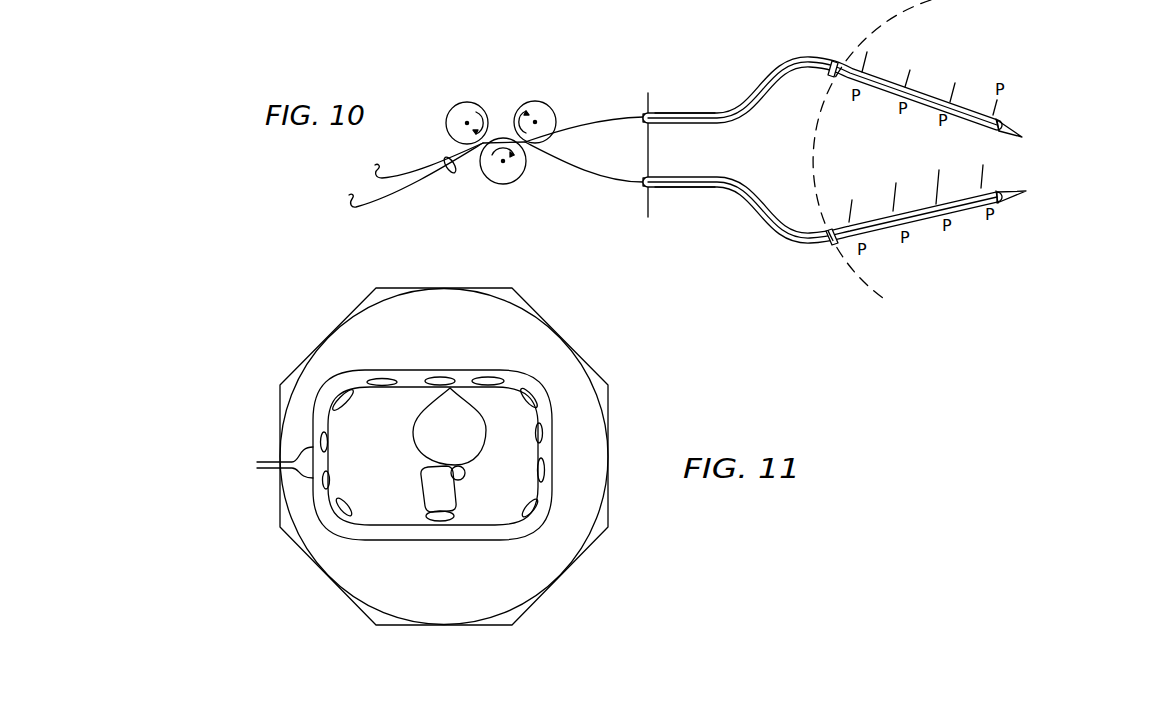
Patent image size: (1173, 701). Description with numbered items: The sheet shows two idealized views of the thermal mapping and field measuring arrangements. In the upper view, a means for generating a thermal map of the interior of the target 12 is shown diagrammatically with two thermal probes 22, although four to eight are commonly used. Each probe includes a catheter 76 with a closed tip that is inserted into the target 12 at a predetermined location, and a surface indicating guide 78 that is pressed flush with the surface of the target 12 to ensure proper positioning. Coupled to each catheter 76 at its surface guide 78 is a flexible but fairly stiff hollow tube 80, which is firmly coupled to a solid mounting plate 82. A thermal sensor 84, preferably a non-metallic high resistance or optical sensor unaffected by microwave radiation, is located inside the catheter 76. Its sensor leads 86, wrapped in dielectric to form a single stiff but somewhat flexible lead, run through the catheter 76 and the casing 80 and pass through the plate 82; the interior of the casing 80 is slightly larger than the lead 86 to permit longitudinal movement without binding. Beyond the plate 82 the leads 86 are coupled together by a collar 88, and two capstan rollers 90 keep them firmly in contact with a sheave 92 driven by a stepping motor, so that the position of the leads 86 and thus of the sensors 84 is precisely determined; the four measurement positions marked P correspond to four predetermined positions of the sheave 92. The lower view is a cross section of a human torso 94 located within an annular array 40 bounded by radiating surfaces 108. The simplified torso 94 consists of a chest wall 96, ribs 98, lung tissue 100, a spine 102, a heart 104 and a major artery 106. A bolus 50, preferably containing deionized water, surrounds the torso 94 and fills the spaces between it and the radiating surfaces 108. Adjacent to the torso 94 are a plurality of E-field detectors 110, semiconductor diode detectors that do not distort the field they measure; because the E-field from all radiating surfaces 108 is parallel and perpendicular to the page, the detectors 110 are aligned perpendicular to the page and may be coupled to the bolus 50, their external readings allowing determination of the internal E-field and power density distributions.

In FIG. 10, the target 12 is at (885, 300).
In FIG. 10, the thermal probe 22 is at (845, 54).
In FIG. 11, the annular array 40 is at (280, 386).
In FIG. 11, the bolus 50 is at (460, 595).
In FIG. 10, the catheter 76 is at (1015, 128).
In FIG. 10, the surface indicating guide 78 is at (832, 76).
In FIG. 10, the hollow tube 80 is at (762, 80).
In FIG. 10, the mounting plate 82 is at (646, 199).
In FIG. 10, the thermal sensor 84 is at (997, 128).
In FIG. 10, the sensor lead 86 is at (716, 114).
In FIG. 10, the collar 88 is at (453, 174).
In FIG. 10, the capstan roller 90 is at (458, 103).
In FIG. 10, the sheave 92 is at (522, 183).
In FIG. 11, the torso 94 is at (351, 543).
In FIG. 11, the chest wall 96 is at (424, 369).
In FIG. 11, the ribs 98 is at (272, 462).
In FIG. 11, the lung tissue 100 is at (397, 420).
In FIG. 11, the spine 102 is at (424, 483).
In FIG. 11, the heart 104 is at (466, 440).
In FIG. 11, the major artery 106 is at (466, 474).
In FIG. 11, the radiating surface 108 is at (393, 288).
In FIG. 11, the E-field detector 110 is at (392, 358).